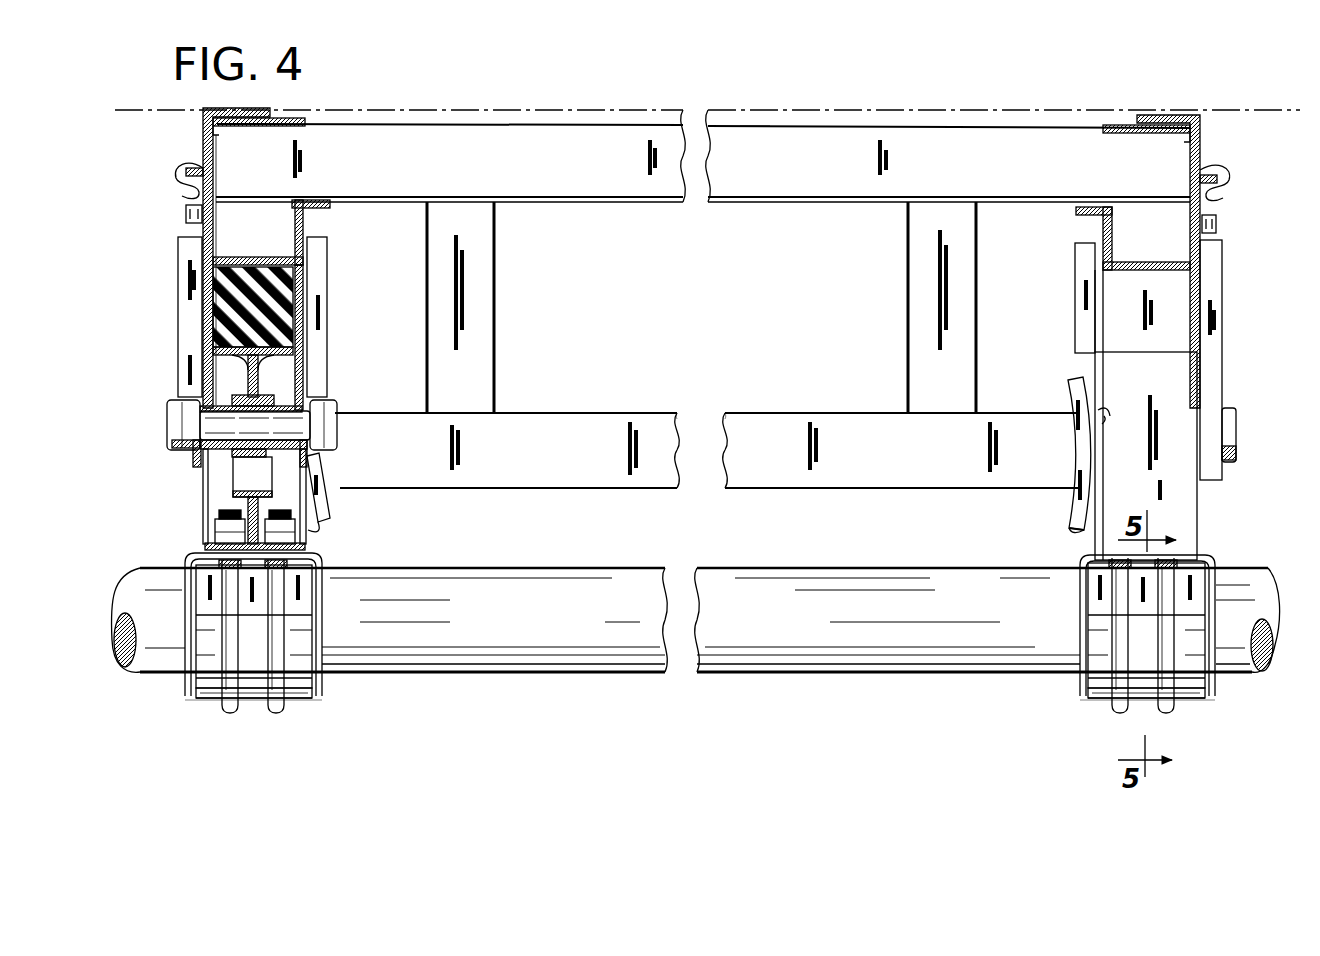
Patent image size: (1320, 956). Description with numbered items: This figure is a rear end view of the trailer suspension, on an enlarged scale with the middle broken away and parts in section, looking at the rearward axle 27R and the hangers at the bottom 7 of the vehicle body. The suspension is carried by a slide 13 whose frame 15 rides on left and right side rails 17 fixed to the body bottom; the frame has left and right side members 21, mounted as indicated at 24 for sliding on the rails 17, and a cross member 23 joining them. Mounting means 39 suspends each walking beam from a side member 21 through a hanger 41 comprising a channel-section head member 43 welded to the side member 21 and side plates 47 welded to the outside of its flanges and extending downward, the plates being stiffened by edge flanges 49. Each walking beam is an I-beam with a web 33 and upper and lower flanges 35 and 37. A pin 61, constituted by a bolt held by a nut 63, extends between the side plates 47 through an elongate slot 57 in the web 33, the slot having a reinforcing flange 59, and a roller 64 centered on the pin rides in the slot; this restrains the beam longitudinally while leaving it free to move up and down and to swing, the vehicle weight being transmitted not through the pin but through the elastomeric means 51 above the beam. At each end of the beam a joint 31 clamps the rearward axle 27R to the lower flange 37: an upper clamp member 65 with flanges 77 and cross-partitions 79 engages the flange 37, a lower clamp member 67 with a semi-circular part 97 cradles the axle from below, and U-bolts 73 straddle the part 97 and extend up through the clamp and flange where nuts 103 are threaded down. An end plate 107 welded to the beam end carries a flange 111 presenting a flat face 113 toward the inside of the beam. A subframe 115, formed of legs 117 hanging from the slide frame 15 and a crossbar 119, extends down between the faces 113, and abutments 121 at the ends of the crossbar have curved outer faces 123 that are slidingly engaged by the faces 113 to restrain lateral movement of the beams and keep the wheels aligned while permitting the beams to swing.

The bottom of the body 7 is at (774, 128).
The slide 13 is at (862, 124).
The frame 15 is at (648, 204).
The side rails 17 is at (204, 118).
The side members 21 is at (300, 118).
The cross member 23 is at (817, 204).
The sliding mounting 24 is at (182, 172).
The rearward axle 27R is at (782, 680).
The joint 31 is at (232, 736).
The web 33 is at (268, 377).
The upper flange 35 is at (213, 351).
The lower flange 37 is at (210, 548).
The mounting means 39 is at (172, 258).
The hanger 41 is at (330, 249).
The head member 43 is at (303, 228).
The side plates 47 is at (306, 275).
The flanges 49 is at (190, 240).
The elastomeric means 51 is at (293, 301).
The slot 57 is at (240, 400).
The reinforcing flange 59 is at (268, 410).
The pin 61 is at (190, 430).
The nut 63 is at (309, 446).
The roller 64 is at (240, 462).
The upper clamp member 65 is at (184, 556).
The lower clamp member 67 is at (194, 698).
The U-bolts 73 is at (276, 716).
The flanges 77 is at (186, 590).
The cross-partitions 79 is at (305, 589).
The semi-circular part 97 is at (313, 696).
The nuts 103 is at (216, 532).
The end plate 107 is at (1175, 508).
The flange 111 is at (1110, 414).
The flat face 113 is at (1093, 539).
The subframe 115 is at (654, 495).
The legs 117 is at (487, 290).
The crossbar 119 is at (725, 415).
The abutments 121 is at (328, 498).
The outer faces 123 is at (322, 531).